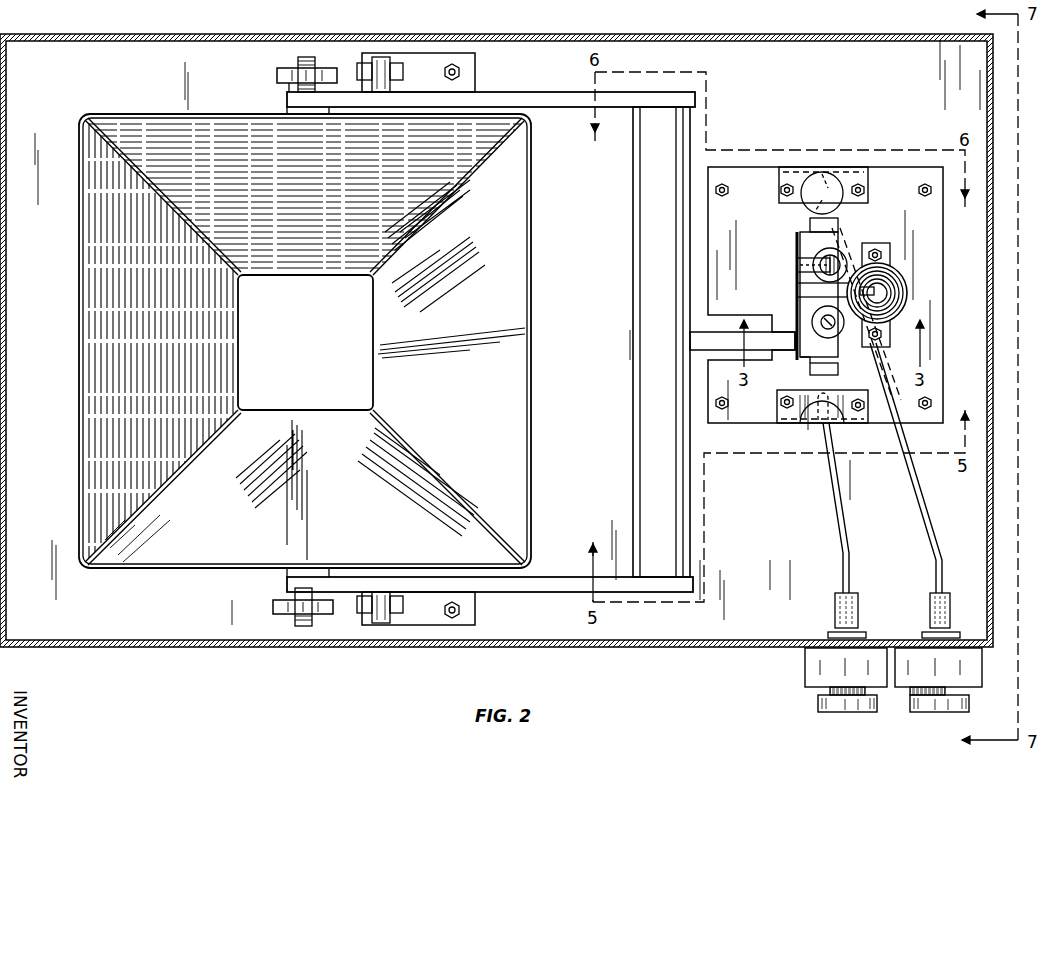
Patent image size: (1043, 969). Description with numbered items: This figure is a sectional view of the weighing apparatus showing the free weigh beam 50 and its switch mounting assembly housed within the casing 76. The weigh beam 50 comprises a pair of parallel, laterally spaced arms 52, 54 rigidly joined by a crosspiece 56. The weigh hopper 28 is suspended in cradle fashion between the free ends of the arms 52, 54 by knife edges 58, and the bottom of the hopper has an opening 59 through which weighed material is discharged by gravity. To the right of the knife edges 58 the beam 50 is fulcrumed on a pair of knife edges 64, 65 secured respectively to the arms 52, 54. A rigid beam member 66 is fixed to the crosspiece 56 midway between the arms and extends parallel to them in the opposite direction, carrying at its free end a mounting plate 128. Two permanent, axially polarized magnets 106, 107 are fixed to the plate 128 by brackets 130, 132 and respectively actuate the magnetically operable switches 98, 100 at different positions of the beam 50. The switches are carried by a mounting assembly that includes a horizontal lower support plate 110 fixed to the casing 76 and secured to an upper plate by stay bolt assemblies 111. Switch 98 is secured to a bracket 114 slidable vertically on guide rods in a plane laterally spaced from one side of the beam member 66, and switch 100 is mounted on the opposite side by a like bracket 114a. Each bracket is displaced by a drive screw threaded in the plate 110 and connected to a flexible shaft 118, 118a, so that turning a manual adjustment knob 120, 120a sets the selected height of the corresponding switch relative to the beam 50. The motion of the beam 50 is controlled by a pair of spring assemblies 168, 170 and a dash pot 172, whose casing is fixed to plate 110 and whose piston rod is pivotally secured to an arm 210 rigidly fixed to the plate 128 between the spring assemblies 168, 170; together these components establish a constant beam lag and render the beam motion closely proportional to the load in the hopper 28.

The weigh hopper 28 is at (321, 206).
The free weigh beam 50 is at (537, 90).
The arm 52 is at (538, 577).
The arm 54 is at (498, 92).
The crosspiece 56 is at (690, 496).
The knife edges 58 is at (298, 62).
The opening 59 is at (272, 276).
The knife edge 64 is at (378, 625).
The knife edge 65 is at (384, 62).
The beam member 66 is at (700, 340).
The casing 76 is at (701, 37).
The switch 98 is at (838, 388).
The switch 100 is at (800, 218).
The permanent magnet 106 is at (811, 370).
The permanent magnet 107 is at (812, 226).
The lower support plate 110 is at (930, 278).
The stay bolt assemblies 111 is at (726, 184).
The bracket 114 is at (856, 424).
The bracket 114a is at (852, 170).
The flexible shaft 118 is at (836, 536).
The flexible shaft 118a is at (925, 536).
The manual adjustment knob 120 is at (836, 706).
The manual adjustment knob 120a is at (932, 706).
The mounting plate 128 is at (797, 268).
The bracket 130 is at (816, 368).
The bracket 132 is at (842, 252).
The spring assembly 168 is at (905, 295).
The spring assembly 170 is at (876, 246).
The dash pot 172 is at (900, 270).
The arm 210 is at (797, 290).